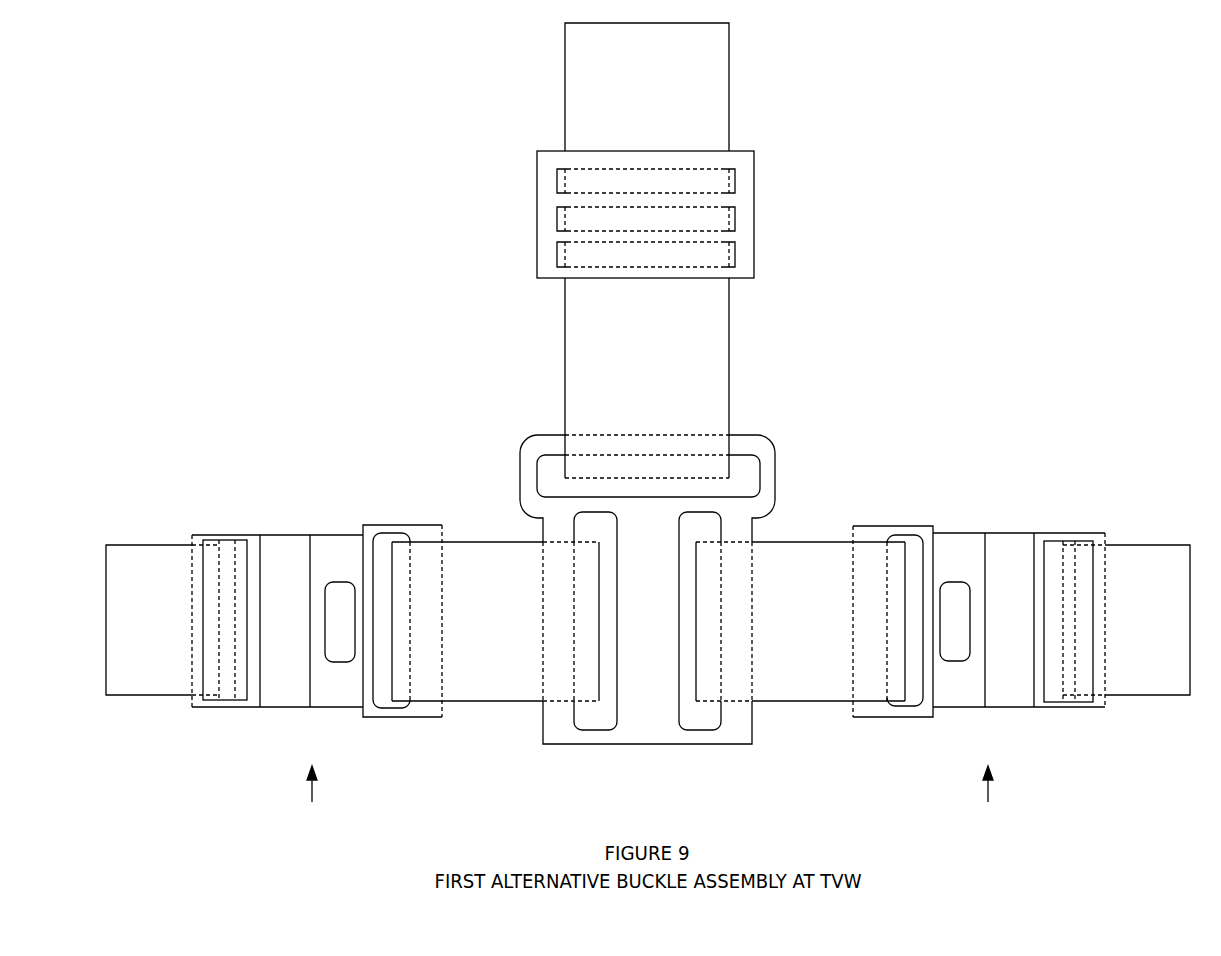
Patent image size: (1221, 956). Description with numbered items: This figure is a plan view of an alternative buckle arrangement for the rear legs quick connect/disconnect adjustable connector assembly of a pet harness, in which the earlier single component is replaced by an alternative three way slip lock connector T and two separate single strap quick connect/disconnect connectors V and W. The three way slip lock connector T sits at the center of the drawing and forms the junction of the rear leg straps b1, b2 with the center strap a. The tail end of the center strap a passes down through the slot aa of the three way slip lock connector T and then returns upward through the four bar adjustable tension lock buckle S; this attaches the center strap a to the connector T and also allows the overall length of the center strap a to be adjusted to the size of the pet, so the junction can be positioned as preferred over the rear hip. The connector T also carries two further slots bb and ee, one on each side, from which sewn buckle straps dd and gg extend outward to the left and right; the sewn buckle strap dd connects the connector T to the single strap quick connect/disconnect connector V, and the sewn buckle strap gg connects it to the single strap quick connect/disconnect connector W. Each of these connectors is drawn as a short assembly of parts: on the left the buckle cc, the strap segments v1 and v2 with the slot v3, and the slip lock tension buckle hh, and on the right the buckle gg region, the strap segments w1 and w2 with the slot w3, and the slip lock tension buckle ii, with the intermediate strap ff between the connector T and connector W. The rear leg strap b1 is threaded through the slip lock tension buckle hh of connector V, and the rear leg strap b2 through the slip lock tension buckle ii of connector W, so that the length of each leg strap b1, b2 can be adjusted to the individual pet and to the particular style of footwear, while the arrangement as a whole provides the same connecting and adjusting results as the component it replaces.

The center strap a is at (647, 250).
The four bar adjustable tension lock buckle S is at (537, 213).
The three way slip lock connector T is at (696, 568).
The slot aa is at (755, 458).
The slot bb is at (608, 720).
The slot ee is at (690, 720).
The left loop buckle cc is at (382, 720).
The sewn buckle strap dd is at (502, 675).
The right connecting strap ff is at (797, 675).
The sewn buckle strap gg is at (918, 717).
The slip lock tension buckle hh is at (221, 695).
The slip lock tension buckle ii is at (1075, 703).
The left strap segment 1 v1 is at (278, 565).
The left strap segment 2 v2 is at (325, 565).
The left strap slot v3 is at (337, 593).
The right strap segment 1 w1 is at (1020, 565).
The right strap segment 2 w2 is at (973, 565).
The right strap slot w3 is at (960, 593).
The rear leg strap b1 is at (162, 620).
The rear leg strap b2 is at (1126, 620).
The single strap quick connect/disconnect connector V is at (312, 799).
The single strap quick connect/disconnect connector W is at (988, 799).